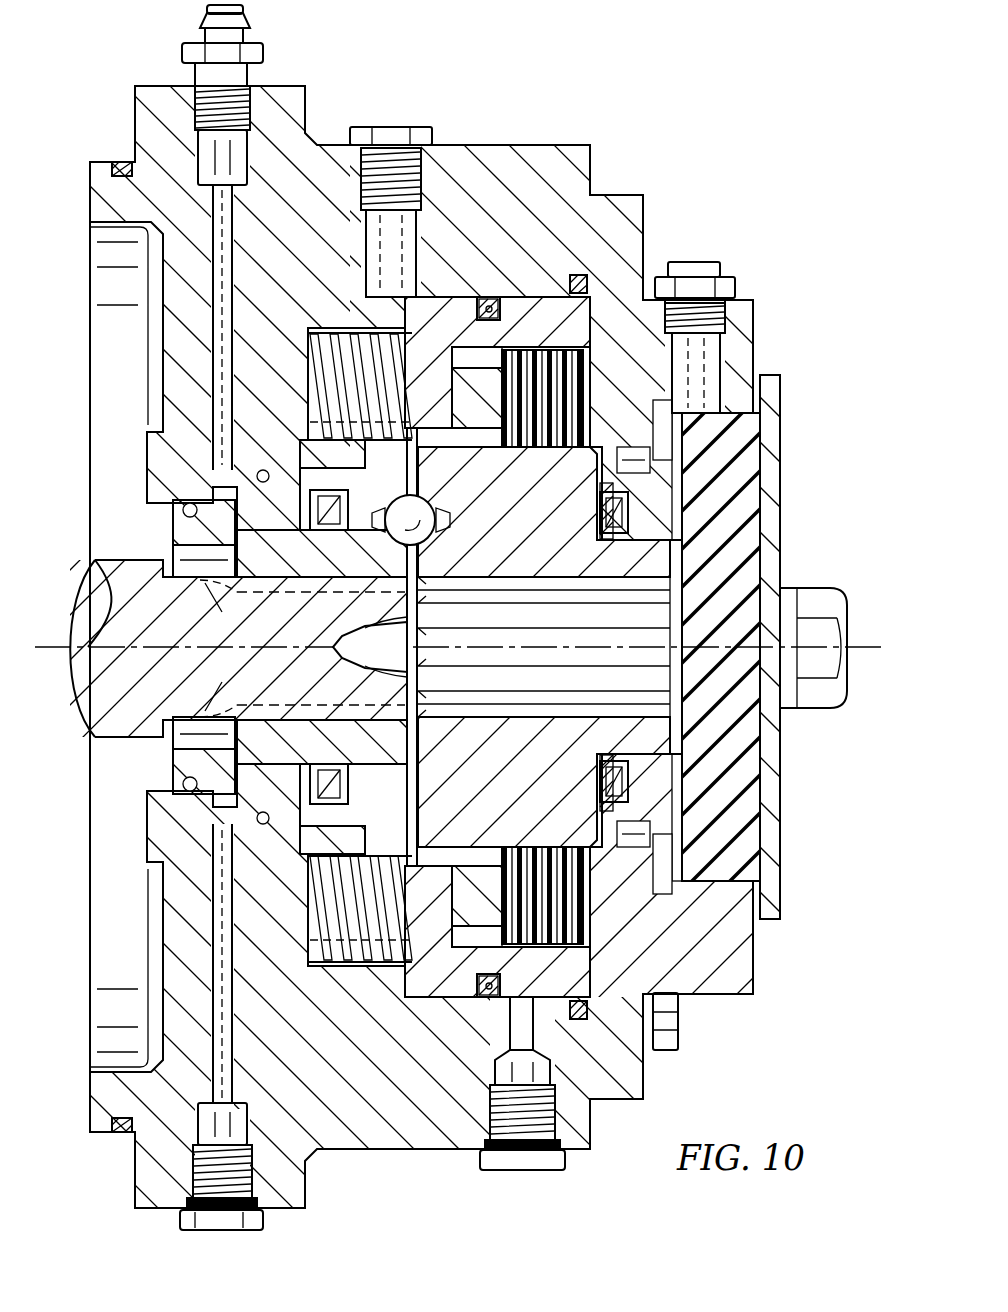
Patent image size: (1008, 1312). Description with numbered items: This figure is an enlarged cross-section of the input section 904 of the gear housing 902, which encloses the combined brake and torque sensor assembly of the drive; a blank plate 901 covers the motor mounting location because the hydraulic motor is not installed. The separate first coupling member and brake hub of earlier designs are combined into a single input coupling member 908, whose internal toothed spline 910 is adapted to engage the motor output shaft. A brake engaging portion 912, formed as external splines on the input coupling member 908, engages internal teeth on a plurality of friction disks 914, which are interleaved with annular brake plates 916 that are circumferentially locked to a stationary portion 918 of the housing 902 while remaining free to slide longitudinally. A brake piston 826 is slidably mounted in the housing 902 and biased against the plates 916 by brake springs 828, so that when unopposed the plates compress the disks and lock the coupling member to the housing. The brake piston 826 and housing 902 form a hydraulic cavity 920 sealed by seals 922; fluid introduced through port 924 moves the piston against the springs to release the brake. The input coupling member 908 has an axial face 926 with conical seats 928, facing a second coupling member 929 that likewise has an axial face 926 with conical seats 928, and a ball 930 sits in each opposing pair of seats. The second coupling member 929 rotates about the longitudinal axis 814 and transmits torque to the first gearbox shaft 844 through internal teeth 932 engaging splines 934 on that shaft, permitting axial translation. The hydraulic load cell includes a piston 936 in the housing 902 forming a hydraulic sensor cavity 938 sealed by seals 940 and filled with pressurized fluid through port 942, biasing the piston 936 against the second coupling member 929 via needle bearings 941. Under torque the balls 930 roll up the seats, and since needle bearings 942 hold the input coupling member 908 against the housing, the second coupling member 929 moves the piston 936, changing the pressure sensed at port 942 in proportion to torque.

The input section 904 is at (556, 80).
The gear housing 902 is at (592, 160).
The port / needle bearings 942 is at (226, 258).
The brake piston 826 is at (440, 299).
The brake springs 828 is at (342, 327).
The hydraulic cavity 920 is at (515, 315).
The hydraulic sensor cavity 938 is at (243, 470).
The seals 940 is at (185, 506).
The piston 936 is at (178, 528).
The conical seats 928 is at (432, 483).
The ball 930 is at (433, 540).
The internal toothed spline 910 is at (563, 597).
The input coupling member 908 is at (660, 563).
The blank plate 901 is at (742, 510).
The longitudinal axis 814 is at (872, 650).
The splines 934 is at (230, 616).
The internal teeth 932 is at (300, 582).
The axial face 926 is at (397, 733).
The first gearbox shaft 844 is at (104, 741).
The needle bearings 941 is at (318, 771).
The second coupling member 929 is at (420, 760).
The friction disks 914 is at (535, 846).
The brake plates 916 is at (500, 855).
The brake engaging portion 912 is at (596, 870).
The stationary portion 918 is at (400, 985).
The seals 922 is at (486, 999).
The port 924 is at (530, 1187).